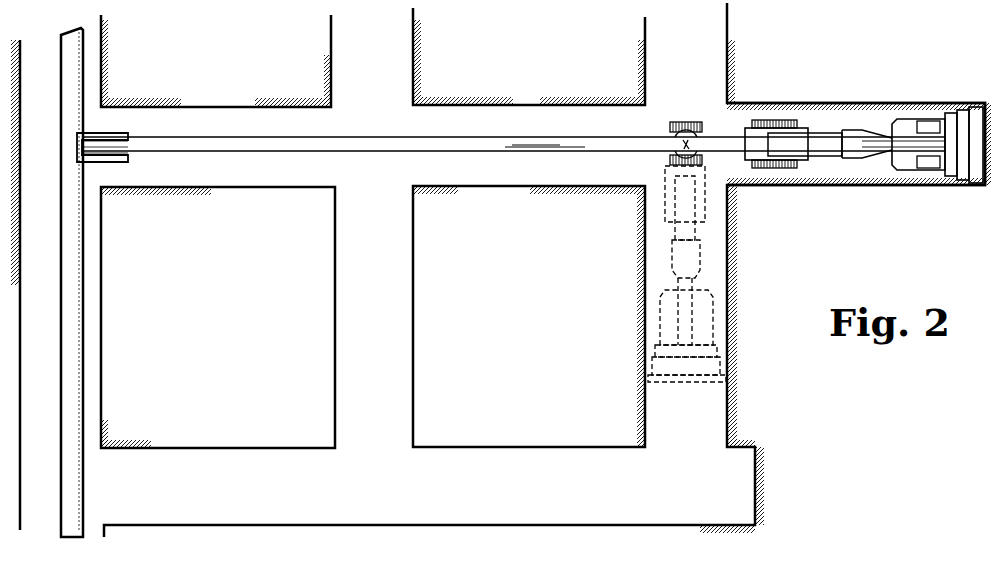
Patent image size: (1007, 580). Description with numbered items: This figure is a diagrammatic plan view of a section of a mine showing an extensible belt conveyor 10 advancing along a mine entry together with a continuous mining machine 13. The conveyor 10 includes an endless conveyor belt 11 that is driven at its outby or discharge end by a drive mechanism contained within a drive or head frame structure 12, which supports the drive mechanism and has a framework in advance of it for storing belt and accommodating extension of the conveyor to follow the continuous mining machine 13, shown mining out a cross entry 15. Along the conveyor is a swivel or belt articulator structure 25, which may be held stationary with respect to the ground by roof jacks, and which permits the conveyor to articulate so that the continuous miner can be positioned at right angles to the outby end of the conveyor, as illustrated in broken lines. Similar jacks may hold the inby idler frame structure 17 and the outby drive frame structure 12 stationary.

The extensible belt conveyor 10 is at (357, 137).
The endless conveyor belt 11 is at (529, 139).
The drive or head frame structure 12 is at (112, 133).
The continuous mining machine 13 is at (908, 166).
The cross entry 15 is at (823, 168).
The inby idler frame structure 17 is at (806, 129).
The belt articulator structure 25 is at (683, 122).